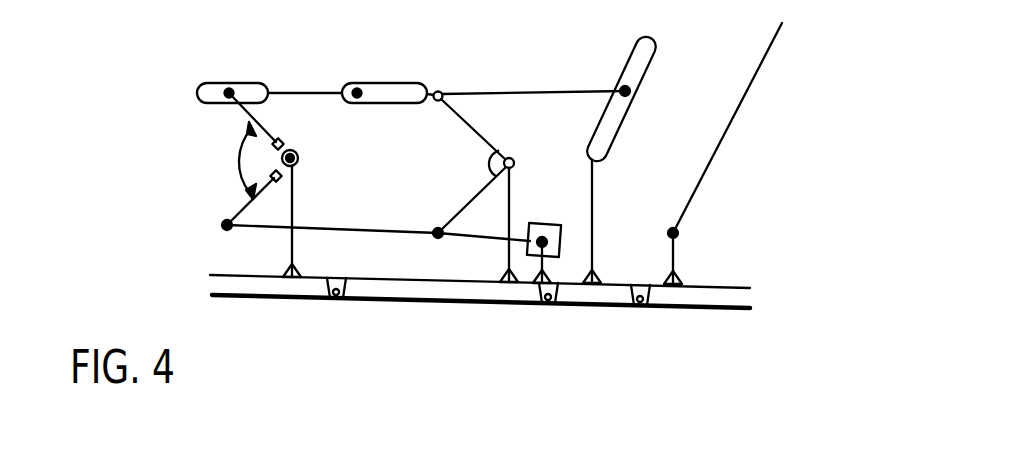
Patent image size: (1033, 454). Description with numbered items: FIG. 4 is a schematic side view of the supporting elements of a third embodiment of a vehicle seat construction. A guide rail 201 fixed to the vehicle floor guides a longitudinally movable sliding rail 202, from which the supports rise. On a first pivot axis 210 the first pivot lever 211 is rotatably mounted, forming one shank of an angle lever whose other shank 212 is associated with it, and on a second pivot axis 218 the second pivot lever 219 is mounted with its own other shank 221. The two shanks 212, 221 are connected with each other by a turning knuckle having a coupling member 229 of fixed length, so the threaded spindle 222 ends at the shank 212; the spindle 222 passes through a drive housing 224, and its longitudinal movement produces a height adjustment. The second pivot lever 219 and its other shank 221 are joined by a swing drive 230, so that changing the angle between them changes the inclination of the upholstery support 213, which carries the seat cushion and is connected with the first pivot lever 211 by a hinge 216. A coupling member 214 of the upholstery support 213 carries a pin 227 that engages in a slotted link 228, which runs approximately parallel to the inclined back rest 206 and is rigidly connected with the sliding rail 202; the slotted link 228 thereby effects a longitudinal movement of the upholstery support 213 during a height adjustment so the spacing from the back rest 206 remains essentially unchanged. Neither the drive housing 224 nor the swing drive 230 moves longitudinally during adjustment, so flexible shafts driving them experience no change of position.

The guide rail 201 is at (707, 308).
The sliding rail 202 is at (710, 288).
The back rest 206 is at (748, 93).
The first pivot axis 210 is at (515, 165).
The first pivot lever 211 is at (476, 130).
The other shank 212 is at (475, 197).
The upholstery support 213 is at (319, 90).
The coupling member 214 is at (595, 67).
The hinge 216 is at (441, 90).
The second pivot axis 218 is at (298, 168).
The second pivot lever 219 is at (244, 112).
The other shank 221 is at (227, 216).
The threaded spindle 222 is at (480, 238).
The drive housing 224 is at (554, 258).
The pin 227 is at (630, 95).
The slotted link 228 is at (656, 58).
The coupling member 229 is at (390, 234).
The swing drive 230 is at (300, 152).